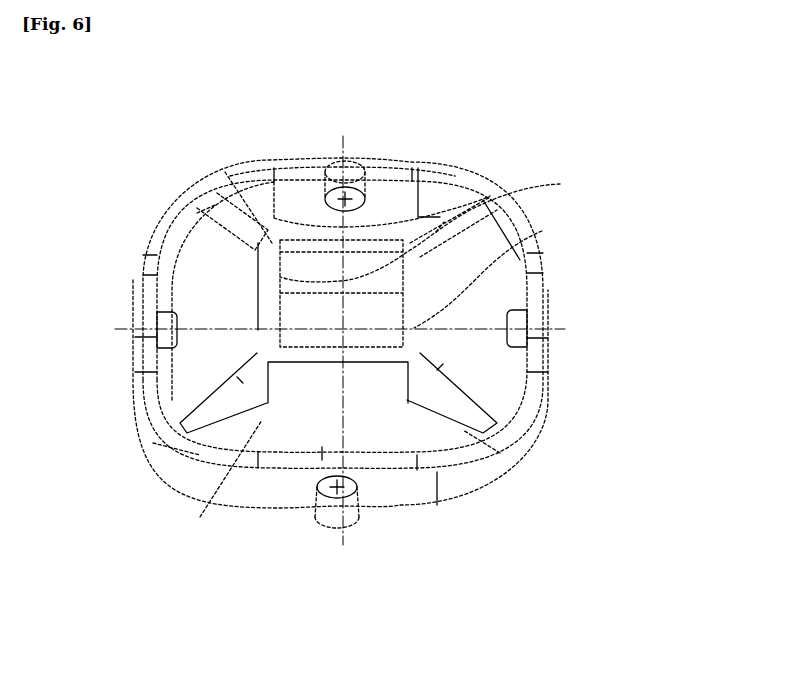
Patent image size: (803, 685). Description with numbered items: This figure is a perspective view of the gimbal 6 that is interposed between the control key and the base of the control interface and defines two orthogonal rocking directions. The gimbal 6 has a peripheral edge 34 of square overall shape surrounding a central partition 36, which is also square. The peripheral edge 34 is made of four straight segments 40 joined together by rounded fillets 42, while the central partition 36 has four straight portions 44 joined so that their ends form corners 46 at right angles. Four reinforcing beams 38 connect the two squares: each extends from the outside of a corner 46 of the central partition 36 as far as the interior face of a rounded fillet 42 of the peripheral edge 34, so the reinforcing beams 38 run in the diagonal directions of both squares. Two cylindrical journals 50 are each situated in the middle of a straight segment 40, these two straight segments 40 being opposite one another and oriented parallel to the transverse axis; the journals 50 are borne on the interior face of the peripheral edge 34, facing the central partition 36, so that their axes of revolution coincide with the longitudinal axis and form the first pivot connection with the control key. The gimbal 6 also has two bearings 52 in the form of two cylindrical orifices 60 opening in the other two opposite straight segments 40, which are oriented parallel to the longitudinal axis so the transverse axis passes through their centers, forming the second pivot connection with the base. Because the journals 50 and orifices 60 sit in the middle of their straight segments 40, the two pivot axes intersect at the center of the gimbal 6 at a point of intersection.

The gimbal 6 is at (531, 159).
The peripheral edge 34 is at (424, 112).
The central partition 36 is at (622, 173).
The reinforcing beams 38 is at (197, 213).
The straight segments 40 is at (407, 167).
The rounded fillets 42 is at (450, 170).
The straight portions 44 is at (560, 184).
The corners 46 is at (225, 172).
The journals 50 is at (150, 318).
The bearings 52 is at (355, 175).
The cylindrical orifices 60 is at (318, 164).